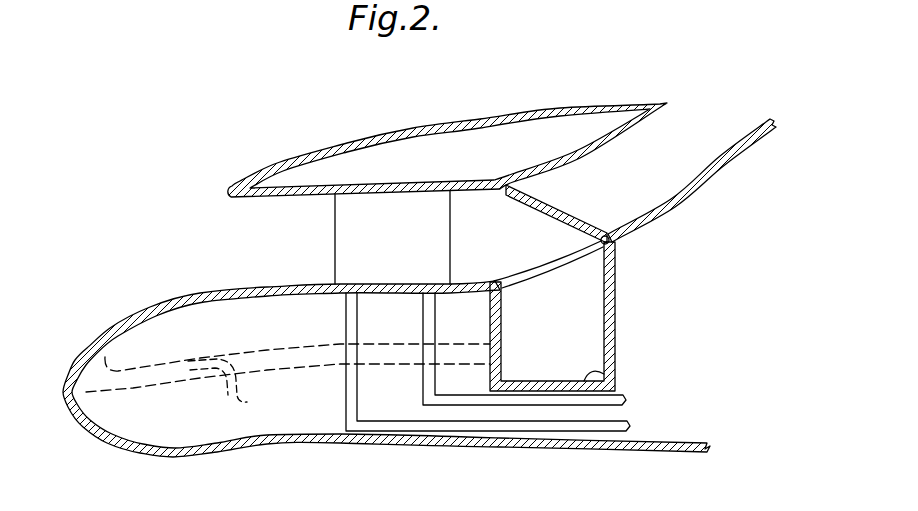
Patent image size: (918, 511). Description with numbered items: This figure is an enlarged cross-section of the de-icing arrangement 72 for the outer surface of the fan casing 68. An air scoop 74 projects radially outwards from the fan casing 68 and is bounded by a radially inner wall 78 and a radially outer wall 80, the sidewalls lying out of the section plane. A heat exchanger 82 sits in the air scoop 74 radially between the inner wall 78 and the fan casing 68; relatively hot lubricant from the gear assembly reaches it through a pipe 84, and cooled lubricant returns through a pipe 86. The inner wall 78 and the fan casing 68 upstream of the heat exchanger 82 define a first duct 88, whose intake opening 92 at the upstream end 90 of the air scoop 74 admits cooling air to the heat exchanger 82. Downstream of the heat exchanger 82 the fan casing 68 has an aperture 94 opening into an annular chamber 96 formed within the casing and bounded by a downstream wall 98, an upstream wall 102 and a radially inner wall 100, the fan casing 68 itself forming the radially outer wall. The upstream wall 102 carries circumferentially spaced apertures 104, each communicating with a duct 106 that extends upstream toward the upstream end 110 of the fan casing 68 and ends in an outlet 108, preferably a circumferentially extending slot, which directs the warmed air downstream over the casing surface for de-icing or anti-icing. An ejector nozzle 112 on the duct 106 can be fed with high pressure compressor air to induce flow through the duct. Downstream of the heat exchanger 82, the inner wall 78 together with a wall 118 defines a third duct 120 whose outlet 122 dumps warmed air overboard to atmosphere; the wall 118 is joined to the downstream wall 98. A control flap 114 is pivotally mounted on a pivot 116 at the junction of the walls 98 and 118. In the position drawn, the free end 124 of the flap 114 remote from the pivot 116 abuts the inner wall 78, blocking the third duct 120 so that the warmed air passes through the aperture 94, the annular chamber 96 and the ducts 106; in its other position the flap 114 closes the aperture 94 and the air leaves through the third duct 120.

The fan casing 68 is at (370, 442).
The de-icing arrangement 72 is at (250, 216).
The air scoop 74 is at (408, 125).
The radially inner wall 78 is at (348, 185).
The radially outer wall 80 is at (481, 121).
The heat exchanger 82 is at (404, 250).
The pipe 84 is at (563, 405).
The pipe 86 is at (508, 423).
The first duct 88 is at (307, 217).
The upstream end 90 is at (229, 187).
The intake opening 92 is at (217, 264).
The aperture 94 is at (553, 263).
The annular chamber 96 is at (533, 330).
The downstream wall 98 is at (610, 342).
The radially inner wall 100 is at (617, 384).
The upstream wall 102 is at (496, 302).
The aperture 104 is at (505, 354).
The duct 106 is at (272, 363).
The outlet 108 is at (98, 339).
The upstream end 110 is at (72, 400).
The ejector nozzle 112 is at (230, 400).
The flap 114 is at (563, 213).
The pivot 116 is at (618, 243).
The wall 118 is at (718, 172).
The third duct 120 is at (642, 177).
The outlet 122 is at (712, 121).
The free end 124 is at (504, 191).